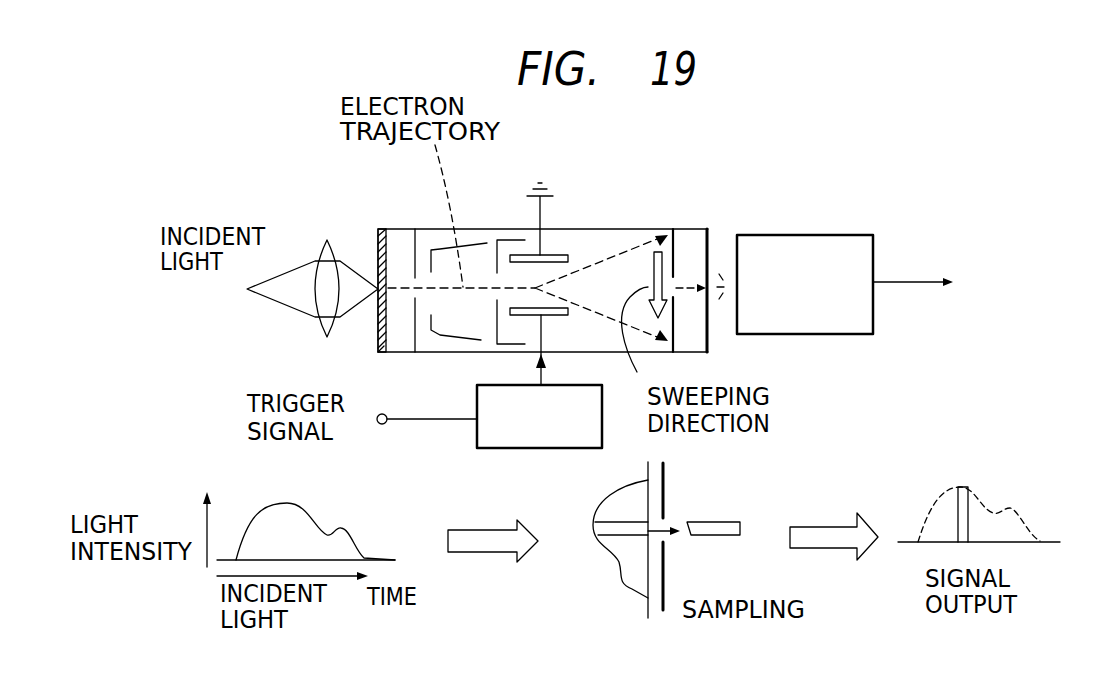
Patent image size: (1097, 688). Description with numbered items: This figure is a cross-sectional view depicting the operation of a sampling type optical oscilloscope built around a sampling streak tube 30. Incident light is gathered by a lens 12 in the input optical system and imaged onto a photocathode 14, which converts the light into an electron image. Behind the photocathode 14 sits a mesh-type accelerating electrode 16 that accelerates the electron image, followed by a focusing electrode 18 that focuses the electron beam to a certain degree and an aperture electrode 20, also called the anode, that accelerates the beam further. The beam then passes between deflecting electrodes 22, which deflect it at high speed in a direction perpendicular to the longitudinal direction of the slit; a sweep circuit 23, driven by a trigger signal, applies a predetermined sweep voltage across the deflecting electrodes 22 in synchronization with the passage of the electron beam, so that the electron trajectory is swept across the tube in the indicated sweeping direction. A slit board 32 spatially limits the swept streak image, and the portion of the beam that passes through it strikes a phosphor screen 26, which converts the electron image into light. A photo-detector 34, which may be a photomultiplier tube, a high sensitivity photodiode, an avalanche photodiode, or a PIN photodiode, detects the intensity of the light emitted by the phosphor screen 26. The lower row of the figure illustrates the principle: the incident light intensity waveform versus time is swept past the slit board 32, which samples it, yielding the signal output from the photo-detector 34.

The lens 12 is at (335, 333).
The photocathode 14 is at (392, 238).
The mesh-type accelerating electrode 16 is at (421, 345).
The focusing electrode 18 is at (442, 245).
The aperture electrode 20 is at (496, 243).
The deflecting electrodes 22 is at (563, 252).
The sweep circuit 23 is at (488, 448).
The phosphor screen 26 is at (715, 233).
The sampling streak tube 30 is at (645, 220).
The slit board 32 is at (675, 325).
The photo-detector 34 is at (862, 235).